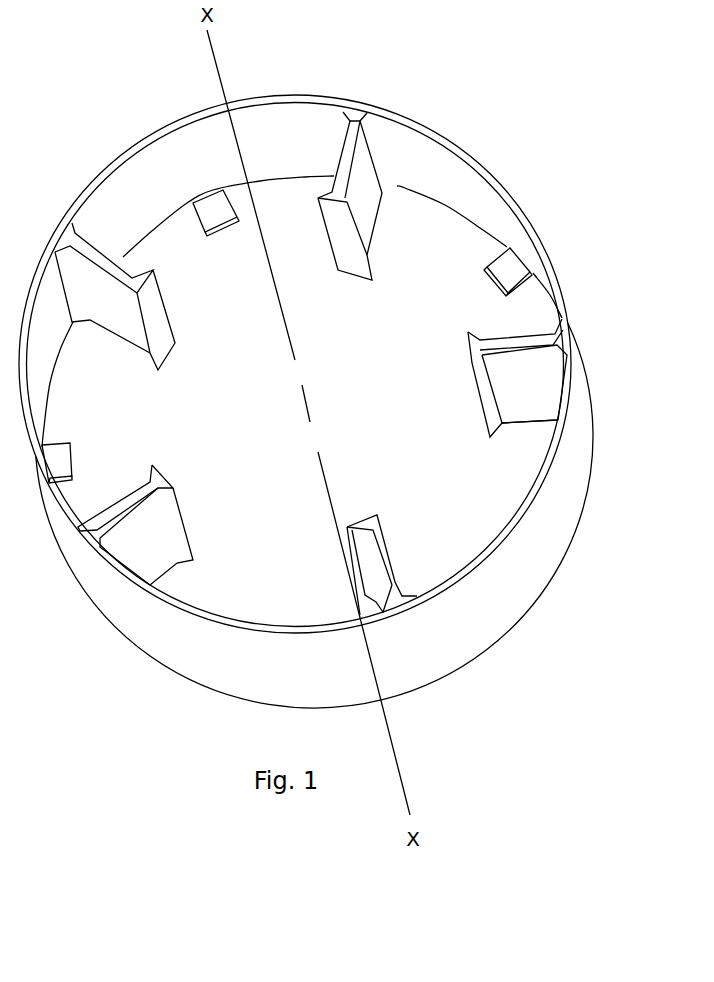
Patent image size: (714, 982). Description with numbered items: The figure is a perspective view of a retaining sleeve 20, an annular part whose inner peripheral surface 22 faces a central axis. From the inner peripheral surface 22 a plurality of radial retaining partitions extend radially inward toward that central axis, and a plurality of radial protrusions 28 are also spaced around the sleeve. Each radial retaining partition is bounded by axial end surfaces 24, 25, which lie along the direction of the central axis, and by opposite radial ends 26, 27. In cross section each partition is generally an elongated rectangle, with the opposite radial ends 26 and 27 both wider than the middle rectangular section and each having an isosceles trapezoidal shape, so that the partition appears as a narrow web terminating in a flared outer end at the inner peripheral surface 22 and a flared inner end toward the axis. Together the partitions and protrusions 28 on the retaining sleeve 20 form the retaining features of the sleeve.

The retaining sleeve 20 is at (499, 97).
The inner peripheral surface 22 is at (437, 192).
The axial end surface 24 is at (517, 345).
The axial end surface 25 is at (523, 427).
The radial end 26 is at (481, 339).
The radial end 27 is at (565, 335).
The radial protrusion 28 is at (500, 275).